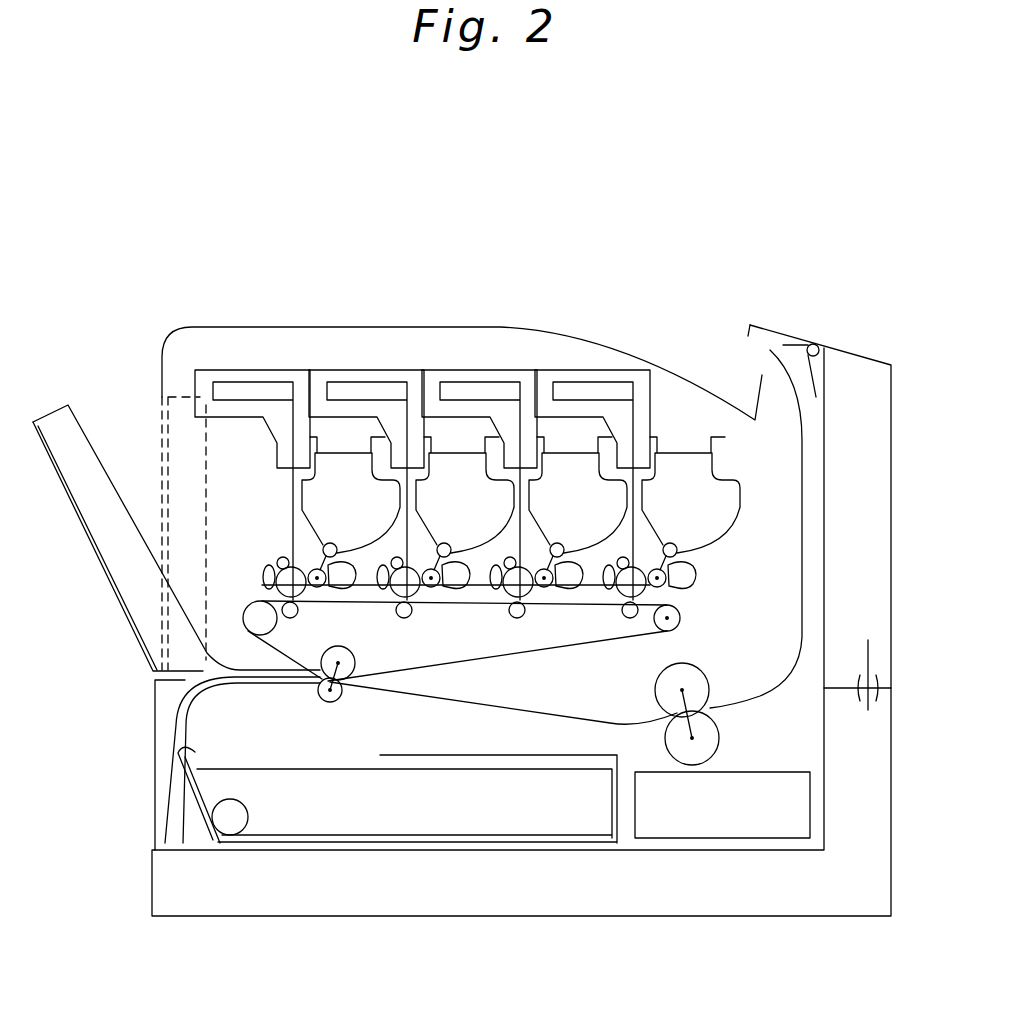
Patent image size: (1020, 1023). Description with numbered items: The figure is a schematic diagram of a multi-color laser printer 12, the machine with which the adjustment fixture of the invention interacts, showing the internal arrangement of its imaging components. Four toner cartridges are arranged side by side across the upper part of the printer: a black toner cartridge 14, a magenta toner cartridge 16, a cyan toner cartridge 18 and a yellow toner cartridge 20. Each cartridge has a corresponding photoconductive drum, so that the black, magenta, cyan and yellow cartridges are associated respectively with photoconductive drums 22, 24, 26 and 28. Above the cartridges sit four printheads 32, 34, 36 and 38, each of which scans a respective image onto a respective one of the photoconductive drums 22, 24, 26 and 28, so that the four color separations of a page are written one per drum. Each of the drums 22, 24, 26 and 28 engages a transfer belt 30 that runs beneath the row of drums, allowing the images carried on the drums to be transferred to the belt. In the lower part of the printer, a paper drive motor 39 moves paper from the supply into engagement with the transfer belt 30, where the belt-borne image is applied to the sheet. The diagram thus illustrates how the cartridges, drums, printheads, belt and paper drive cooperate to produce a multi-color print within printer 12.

The multi-color laser printer 12 is at (690, 258).
The black toner cartridge 14 is at (331, 538).
The magenta toner cartridge 16 is at (445, 538).
The cyan toner cartridge 18 is at (558, 538).
The yellow toner cartridge 20 is at (674, 538).
The photoconductive drum 22 is at (282, 557).
The photoconductive drum 24 is at (425, 603).
The photoconductive drum 26 is at (537, 600).
The photoconductive drum 28 is at (640, 592).
The transfer belt 30 is at (495, 658).
The printhead 32 is at (263, 384).
The printhead 34 is at (385, 384).
The printhead 36 is at (497, 384).
The printhead 38 is at (598, 384).
The paper drive motor 39 is at (246, 809).